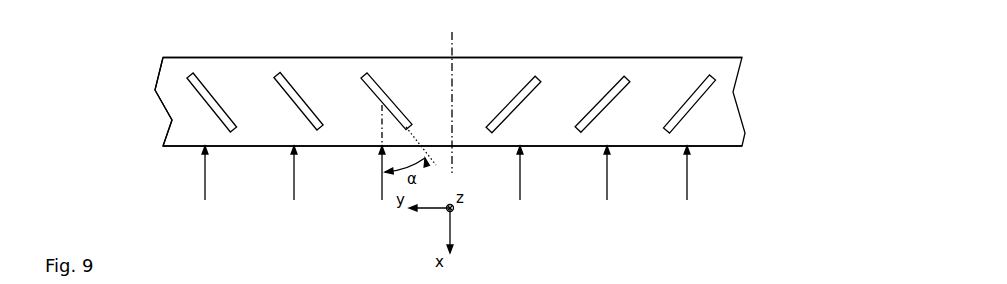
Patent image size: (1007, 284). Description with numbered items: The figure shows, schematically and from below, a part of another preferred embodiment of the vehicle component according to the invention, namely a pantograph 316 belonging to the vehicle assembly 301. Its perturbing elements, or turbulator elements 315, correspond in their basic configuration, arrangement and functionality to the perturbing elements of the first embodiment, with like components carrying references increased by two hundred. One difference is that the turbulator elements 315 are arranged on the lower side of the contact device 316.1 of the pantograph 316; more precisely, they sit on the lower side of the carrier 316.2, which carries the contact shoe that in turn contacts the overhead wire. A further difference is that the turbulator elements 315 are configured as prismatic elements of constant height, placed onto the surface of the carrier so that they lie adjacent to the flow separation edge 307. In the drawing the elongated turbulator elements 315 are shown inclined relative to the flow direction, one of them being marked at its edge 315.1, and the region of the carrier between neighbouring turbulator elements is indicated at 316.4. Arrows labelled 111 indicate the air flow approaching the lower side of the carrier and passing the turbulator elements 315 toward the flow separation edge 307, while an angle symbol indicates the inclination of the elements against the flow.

The pantograph 316 is at (702, 53).
The flow separation edge 307 is at (416, 57).
The contact device 316.1 is at (152, 118).
The carrier 316.2 is at (630, 150).
The plate region between slots 316.4 is at (547, 125).
The guide arrangement 301 is at (781, 37).
The slot edge 315.1 is at (374, 96).
The perturbing elements (turbulator elements) 315 is at (522, 85).
The air flow 111 is at (292, 180).